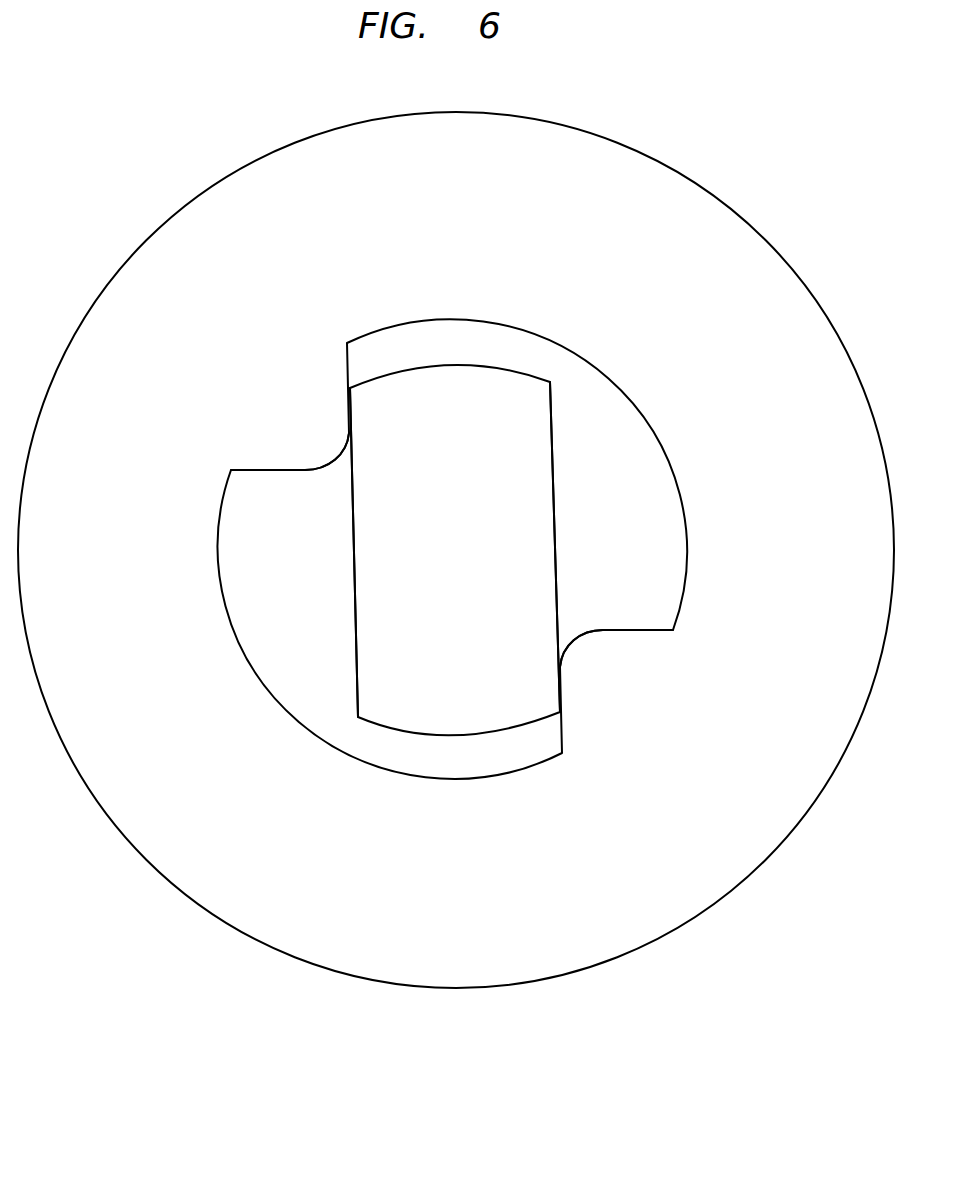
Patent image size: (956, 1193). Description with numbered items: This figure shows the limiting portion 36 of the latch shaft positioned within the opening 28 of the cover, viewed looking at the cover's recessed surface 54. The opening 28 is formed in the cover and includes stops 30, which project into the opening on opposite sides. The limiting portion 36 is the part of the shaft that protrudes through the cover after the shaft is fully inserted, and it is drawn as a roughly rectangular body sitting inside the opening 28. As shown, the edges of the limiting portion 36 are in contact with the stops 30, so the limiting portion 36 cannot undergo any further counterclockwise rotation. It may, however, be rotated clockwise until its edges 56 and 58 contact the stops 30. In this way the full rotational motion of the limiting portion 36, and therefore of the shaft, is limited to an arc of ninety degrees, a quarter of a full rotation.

The recessed surface 54 is at (120, 315).
The opening 28 is at (610, 422).
The stops 30 is at (295, 450).
The limiting portion 36 is at (507, 398).
The edge 56 is at (356, 653).
The edge 58 is at (555, 447).